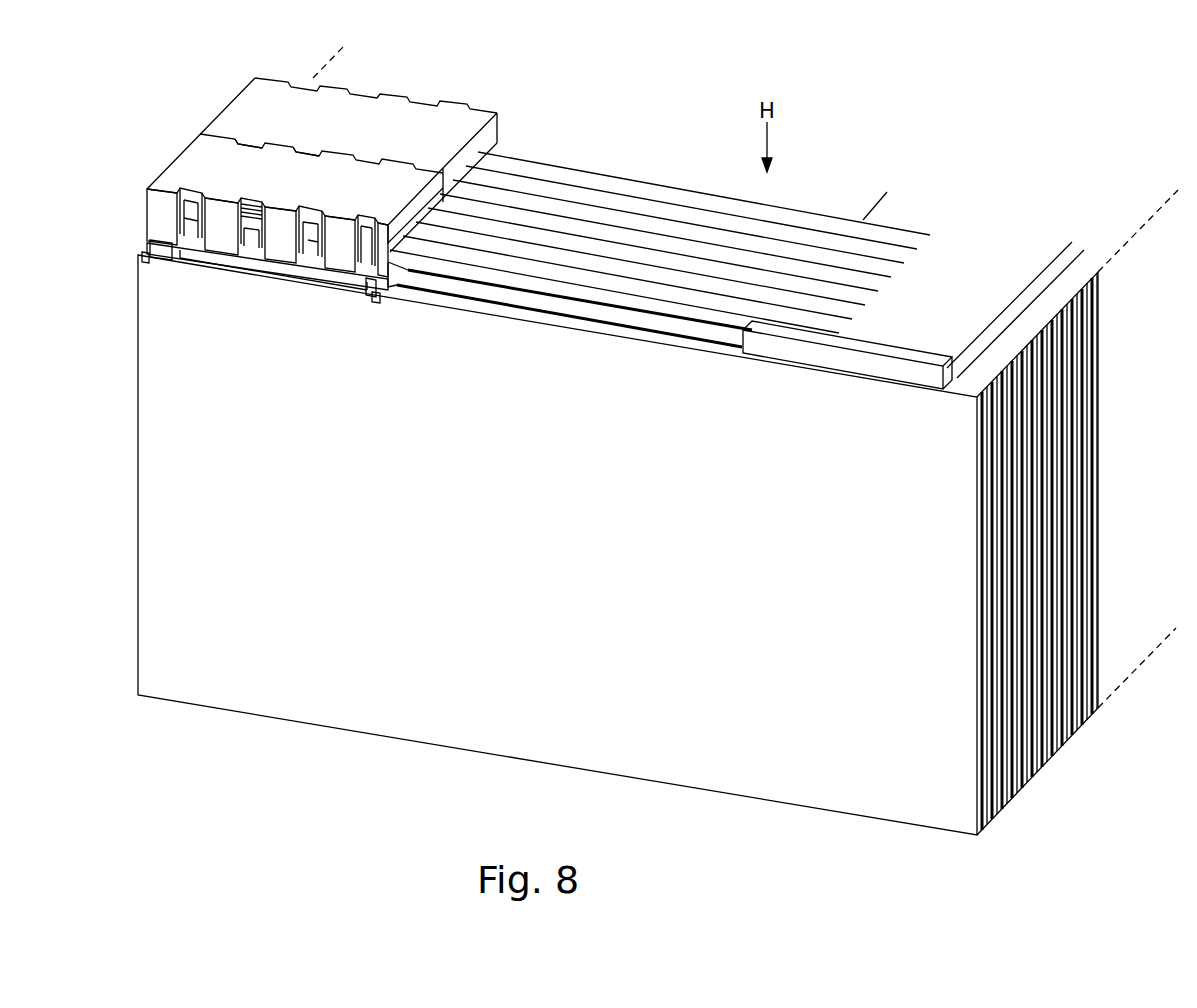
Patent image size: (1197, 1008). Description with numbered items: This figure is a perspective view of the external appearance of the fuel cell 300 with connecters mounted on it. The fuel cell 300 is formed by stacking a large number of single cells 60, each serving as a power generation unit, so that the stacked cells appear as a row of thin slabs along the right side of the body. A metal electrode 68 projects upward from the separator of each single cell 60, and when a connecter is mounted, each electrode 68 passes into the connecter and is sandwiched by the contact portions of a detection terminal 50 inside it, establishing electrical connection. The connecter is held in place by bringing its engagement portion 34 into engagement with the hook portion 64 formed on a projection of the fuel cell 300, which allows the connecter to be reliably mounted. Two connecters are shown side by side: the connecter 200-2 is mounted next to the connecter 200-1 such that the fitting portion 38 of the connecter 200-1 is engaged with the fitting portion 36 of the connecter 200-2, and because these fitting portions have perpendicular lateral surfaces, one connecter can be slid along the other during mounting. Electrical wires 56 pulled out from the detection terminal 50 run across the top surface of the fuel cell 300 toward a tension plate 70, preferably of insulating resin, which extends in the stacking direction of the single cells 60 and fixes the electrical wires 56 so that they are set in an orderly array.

The fuel cell 300 is at (565, 820).
The single cell 60 is at (1097, 502).
The tension plate 70 is at (797, 357).
The electrical wire 56 is at (607, 182).
The detection terminal 50 is at (312, 240).
The connecter 200-1 is at (198, 153).
The connecter 200-2 is at (258, 95).
The fitting portion 38 is at (250, 138).
The fitting portion 36 is at (278, 142).
The electrode 68 is at (240, 258).
The hook portion 64 is at (176, 250).
The engagement portion 34 is at (375, 322).